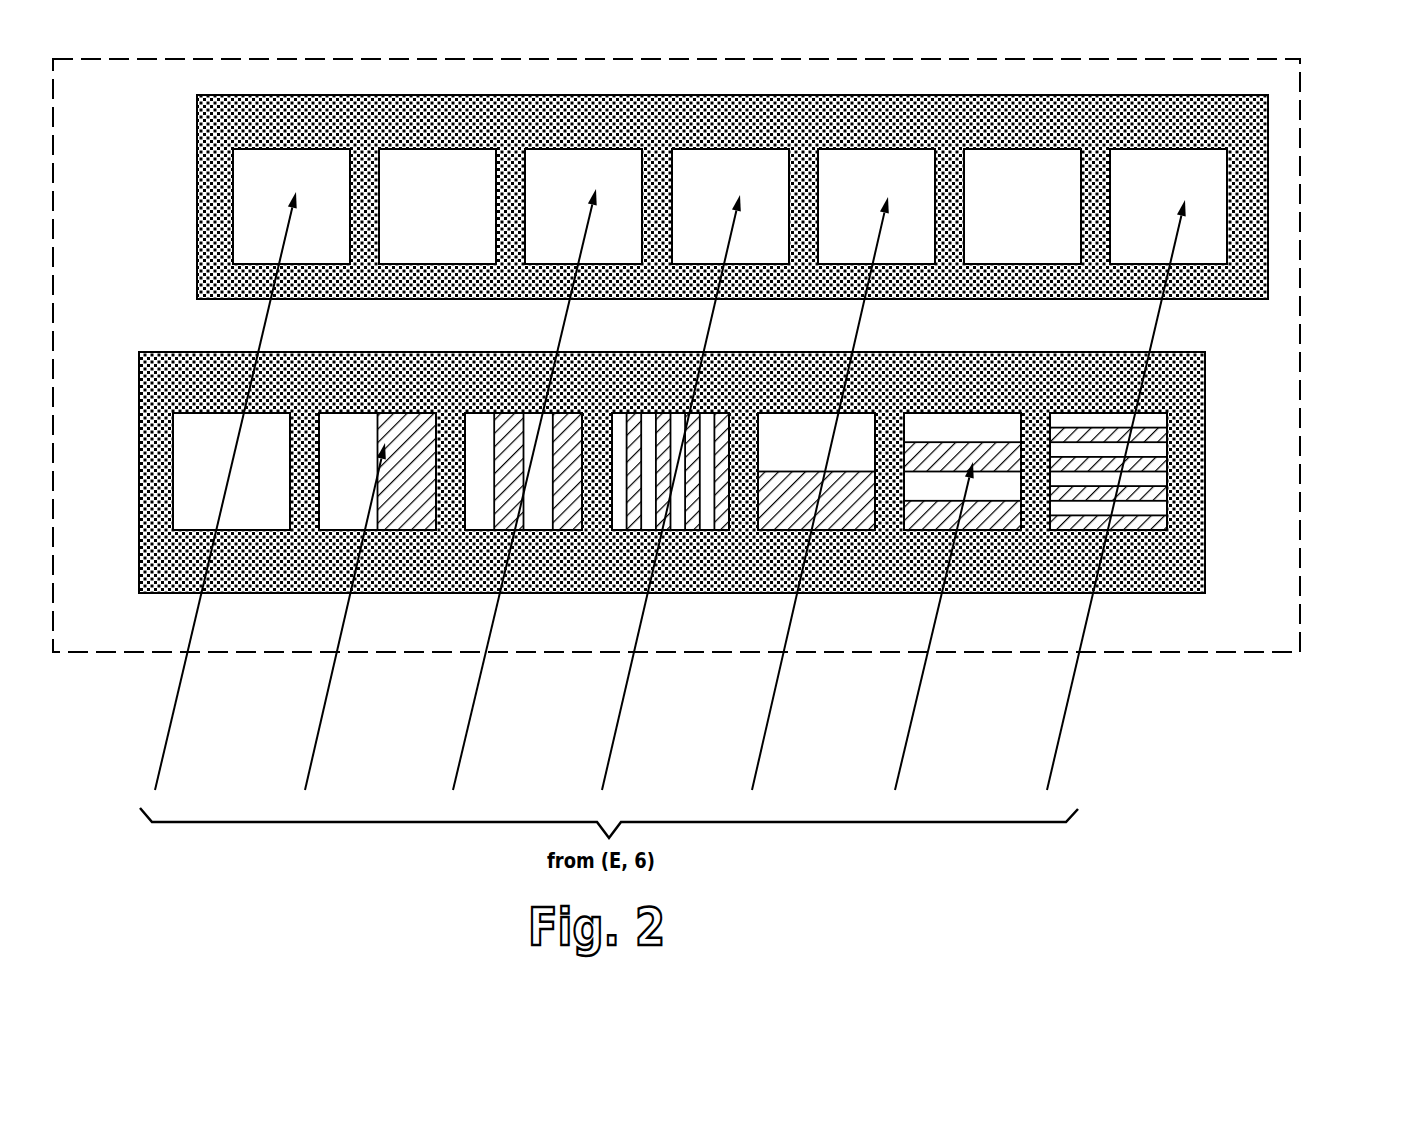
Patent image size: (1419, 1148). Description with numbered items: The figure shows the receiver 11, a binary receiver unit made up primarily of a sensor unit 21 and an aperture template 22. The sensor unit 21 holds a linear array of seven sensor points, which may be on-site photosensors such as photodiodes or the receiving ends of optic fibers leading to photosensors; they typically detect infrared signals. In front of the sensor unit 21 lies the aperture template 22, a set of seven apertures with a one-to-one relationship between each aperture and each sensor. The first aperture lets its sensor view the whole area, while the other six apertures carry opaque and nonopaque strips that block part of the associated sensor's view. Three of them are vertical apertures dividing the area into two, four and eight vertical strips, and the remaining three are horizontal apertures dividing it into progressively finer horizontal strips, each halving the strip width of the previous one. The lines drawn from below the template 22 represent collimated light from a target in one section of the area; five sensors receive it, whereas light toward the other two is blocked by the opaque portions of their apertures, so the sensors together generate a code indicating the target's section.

The receiver 11 is at (1324, 330).
The sensor unit 21 is at (197, 218).
The aperture template 22 is at (139, 489).